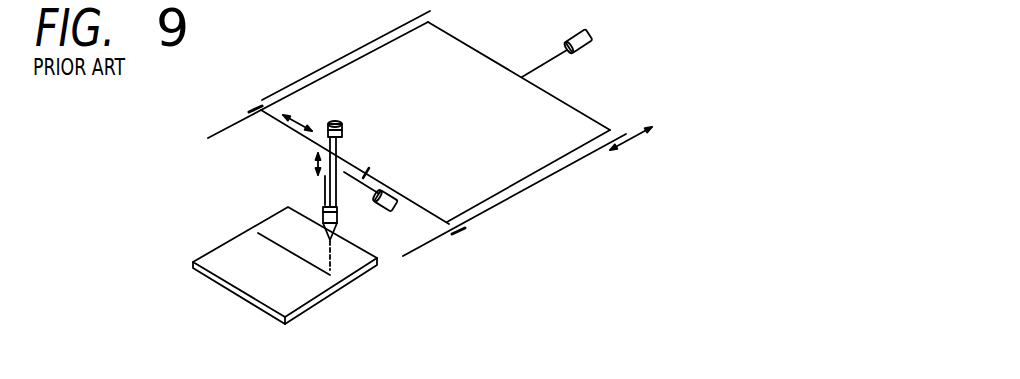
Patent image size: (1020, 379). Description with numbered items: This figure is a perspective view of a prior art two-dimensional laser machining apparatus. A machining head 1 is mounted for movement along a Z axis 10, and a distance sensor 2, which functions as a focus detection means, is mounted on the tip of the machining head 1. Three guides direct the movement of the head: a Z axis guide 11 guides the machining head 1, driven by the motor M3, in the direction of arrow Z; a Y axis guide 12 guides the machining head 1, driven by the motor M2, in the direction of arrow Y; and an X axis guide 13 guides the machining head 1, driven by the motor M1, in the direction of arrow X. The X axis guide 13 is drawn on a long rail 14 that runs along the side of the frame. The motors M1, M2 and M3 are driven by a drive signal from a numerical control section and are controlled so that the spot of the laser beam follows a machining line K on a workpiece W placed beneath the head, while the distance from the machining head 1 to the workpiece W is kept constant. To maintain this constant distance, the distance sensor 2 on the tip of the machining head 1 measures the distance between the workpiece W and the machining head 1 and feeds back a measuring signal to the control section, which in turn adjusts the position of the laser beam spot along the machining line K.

The machining head 1 is at (338, 224).
The distance sensor 2 is at (341, 242).
The Z axis 10 is at (328, 203).
The Z axis guide 11 is at (325, 190).
The Y axis guide 12 is at (366, 170).
The X axis guide 13 is at (256, 105).
The X-axis rail 14 is at (498, 180).
The machining line K is at (266, 240).
The workpiece W is at (294, 293).
The motor M1 is at (593, 45).
The motor M2 is at (389, 194).
The motor M3 is at (336, 122).
The arrow X is at (631, 148).
The arrow Y is at (297, 126).
The arrow Z is at (317, 165).